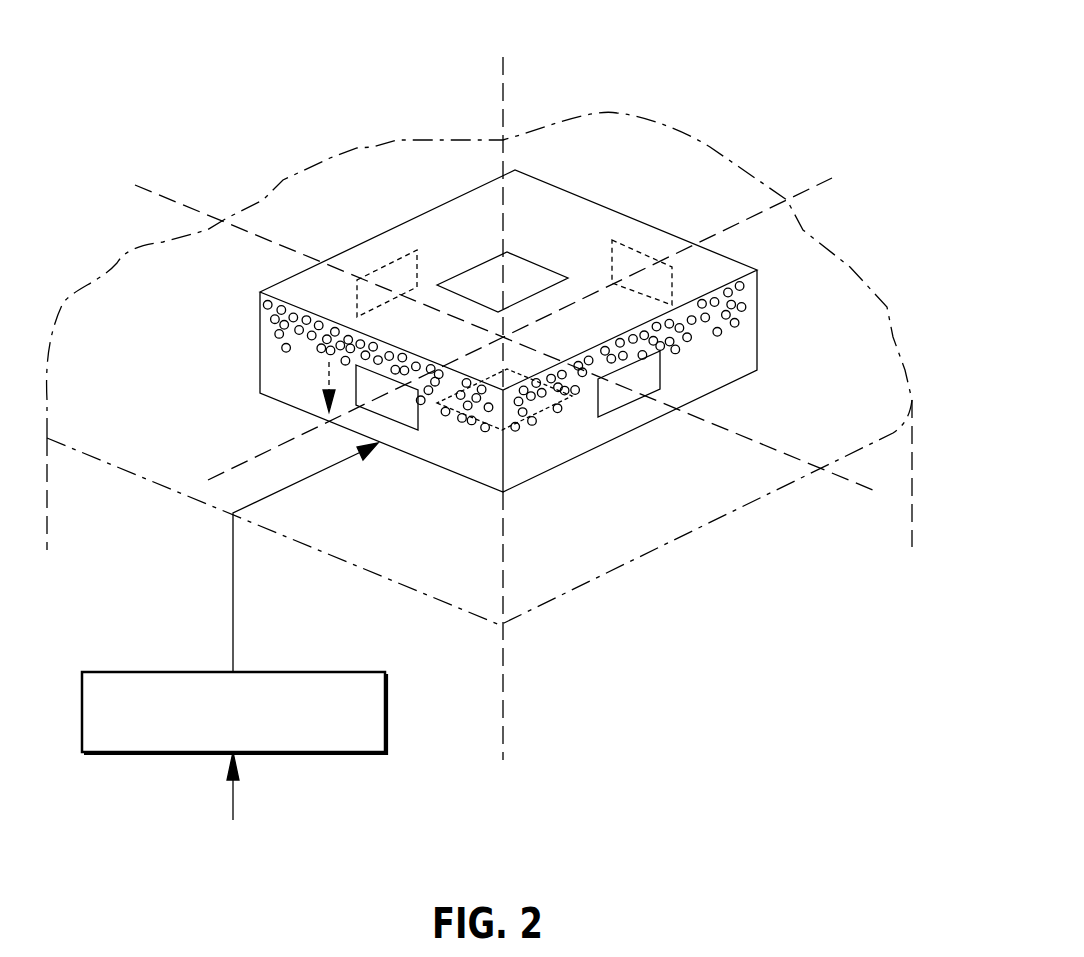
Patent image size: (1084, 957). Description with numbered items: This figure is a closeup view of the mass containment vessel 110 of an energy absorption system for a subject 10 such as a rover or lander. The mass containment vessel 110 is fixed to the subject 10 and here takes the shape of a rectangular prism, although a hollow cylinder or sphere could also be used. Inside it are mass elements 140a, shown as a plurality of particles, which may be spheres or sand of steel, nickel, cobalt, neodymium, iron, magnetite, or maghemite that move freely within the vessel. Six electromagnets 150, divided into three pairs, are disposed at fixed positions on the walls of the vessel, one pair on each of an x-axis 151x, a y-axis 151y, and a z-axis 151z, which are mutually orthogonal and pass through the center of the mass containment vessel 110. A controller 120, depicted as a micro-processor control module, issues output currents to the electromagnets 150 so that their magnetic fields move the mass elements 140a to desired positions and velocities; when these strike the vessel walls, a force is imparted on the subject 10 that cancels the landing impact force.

The subject 10 is at (860, 337).
The mass containment vessel 110 is at (310, 283).
The controller 120 is at (127, 672).
The mass elements 140a is at (263, 335).
The electromagnets 150 is at (493, 267).
The x-axis 151x is at (803, 190).
The y-axis 151y is at (847, 477).
The z-axis 151z is at (503, 85).